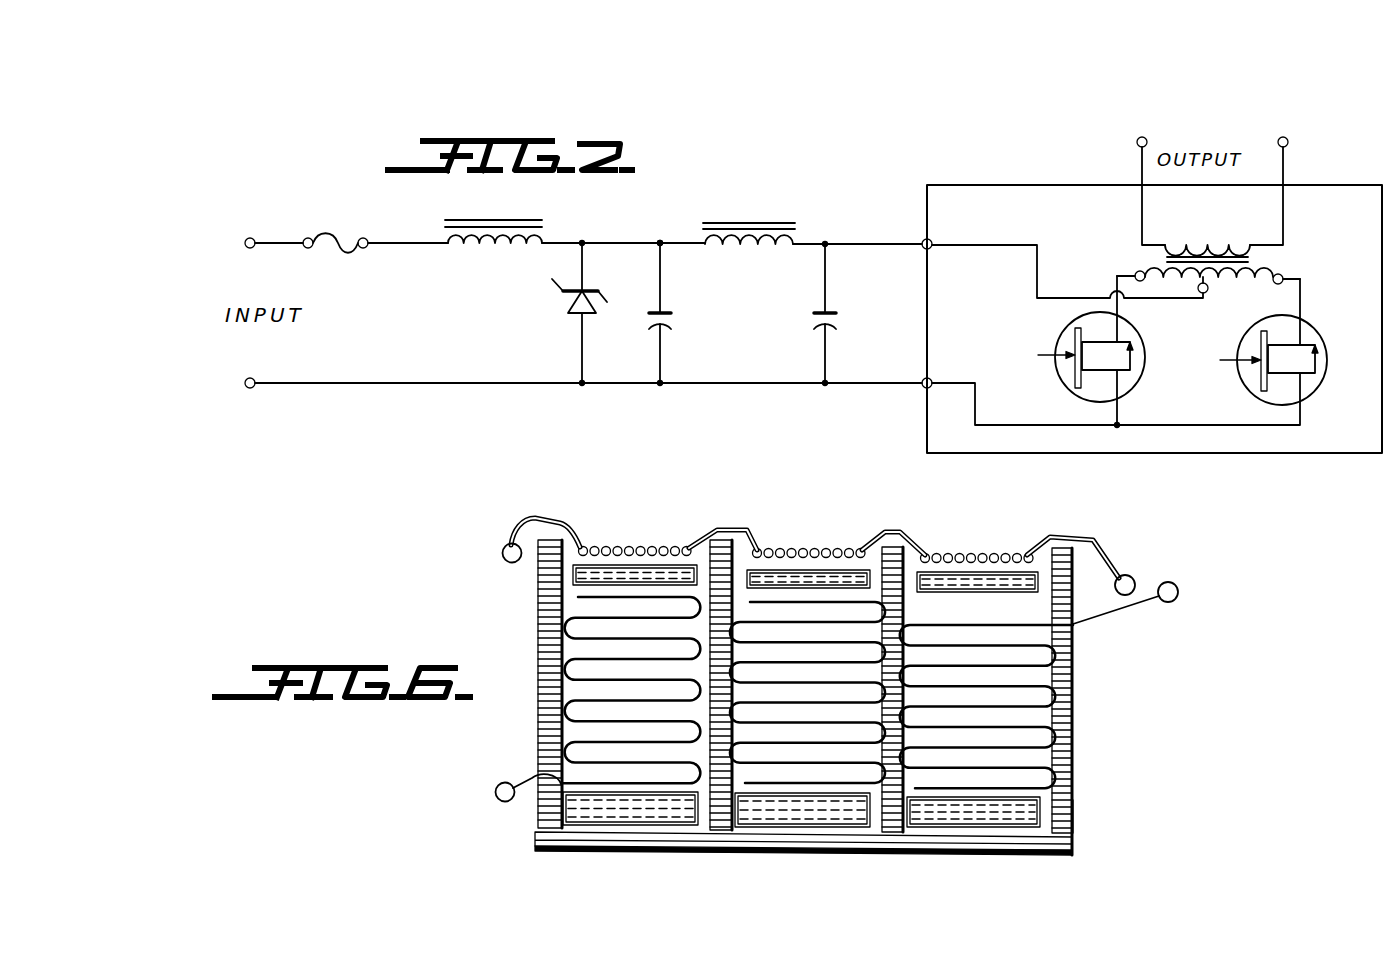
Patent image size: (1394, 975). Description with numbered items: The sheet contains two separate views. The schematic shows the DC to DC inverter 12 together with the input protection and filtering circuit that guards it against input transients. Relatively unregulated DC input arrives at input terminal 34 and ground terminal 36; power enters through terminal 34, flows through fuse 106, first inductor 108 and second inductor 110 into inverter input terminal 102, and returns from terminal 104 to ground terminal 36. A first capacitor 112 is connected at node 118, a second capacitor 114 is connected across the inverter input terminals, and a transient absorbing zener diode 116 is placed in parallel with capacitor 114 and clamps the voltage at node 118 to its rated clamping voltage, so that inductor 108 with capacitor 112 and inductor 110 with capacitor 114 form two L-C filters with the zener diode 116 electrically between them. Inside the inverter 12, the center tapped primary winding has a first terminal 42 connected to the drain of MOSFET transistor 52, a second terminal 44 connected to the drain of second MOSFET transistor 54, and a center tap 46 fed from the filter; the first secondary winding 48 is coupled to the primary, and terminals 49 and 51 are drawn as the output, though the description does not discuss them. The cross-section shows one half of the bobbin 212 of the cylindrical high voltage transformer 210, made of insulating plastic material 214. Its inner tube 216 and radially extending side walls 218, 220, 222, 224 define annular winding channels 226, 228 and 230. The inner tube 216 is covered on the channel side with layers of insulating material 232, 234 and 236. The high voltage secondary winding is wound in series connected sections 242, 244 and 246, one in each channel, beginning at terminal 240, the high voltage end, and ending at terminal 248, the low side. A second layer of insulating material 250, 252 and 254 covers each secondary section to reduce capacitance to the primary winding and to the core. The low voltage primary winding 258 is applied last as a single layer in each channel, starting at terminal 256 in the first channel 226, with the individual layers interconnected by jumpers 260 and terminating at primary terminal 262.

In FIG. 2, the inverter 12 is at (1196, 466).
In FIG. 2, the input terminal 34 is at (253, 237).
In FIG. 2, the ground terminal 36 is at (246, 389).
In FIG. 2, the first terminal 42 is at (1137, 271).
In FIG. 2, the second terminal 44 is at (1283, 275).
In FIG. 2, the center tap 46 is at (1207, 293).
In FIG. 2, the first secondary winding 48 is at (1215, 243).
In FIG. 2, the output terminal 49 is at (1136, 142).
In FIG. 2, the output terminal 51 is at (1289, 142).
In FIG. 2, the MOSFET transistor 52 is at (1068, 392).
In FIG. 2, the second MOSFET transistor 54 is at (1252, 396).
In FIG. 2, the inverter input terminal 102 is at (922, 239).
In FIG. 2, the terminal 104 is at (923, 389).
In FIG. 2, the fuse 106 is at (335, 240).
In FIG. 2, the first inductor 108 is at (495, 250).
In FIG. 2, the second inductor 110 is at (772, 222).
In FIG. 2, the first capacitor 112 is at (672, 316).
In FIG. 2, the second capacitor 114 is at (838, 316).
In FIG. 2, the zener diode 116 is at (560, 300).
In FIG. 2, the node 118 is at (663, 239).
In FIG. 6, the high voltage transformer 210 is at (1108, 691).
In FIG. 6, the bobbin 212 is at (1074, 800).
In FIG. 6, the insulating material 214 is at (1037, 856).
In FIG. 6, the inner tube 216 is at (972, 848).
In FIG. 6, the side wall 218 is at (537, 642).
In FIG. 6, the side wall 220 is at (735, 656).
In FIG. 6, the side wall 222 is at (904, 654).
In FIG. 6, the side wall 224 is at (1074, 652).
In FIG. 6, the annular winding channel 226 is at (577, 769).
In FIG. 6, the annular winding channel 228 is at (765, 776).
In FIG. 6, the annular winding channel 230 is at (1022, 778).
In FIG. 6, the insulating material layer 232 is at (613, 825).
In FIG. 6, the insulating material layer 234 is at (825, 828).
In FIG. 6, the insulating material layer 236 is at (950, 822).
In FIG. 6, the terminal 240 is at (496, 797).
In FIG. 6, the winding section 242 is at (607, 614).
In FIG. 6, the winding section 244 is at (822, 619).
In FIG. 6, the winding section 246 is at (996, 638).
In FIG. 6, the terminal 248 is at (1179, 594).
In FIG. 6, the second insulating layer 250 is at (655, 566).
In FIG. 6, the second insulating layer 252 is at (833, 568).
In FIG. 6, the second insulating layer 254 is at (1000, 572).
In FIG. 6, the terminal 256 is at (502, 553).
In FIG. 6, the primary winding 258 is at (975, 550).
In FIG. 6, the jumper 260 is at (912, 531).
In FIG. 6, the primary terminal 262 is at (1133, 577).